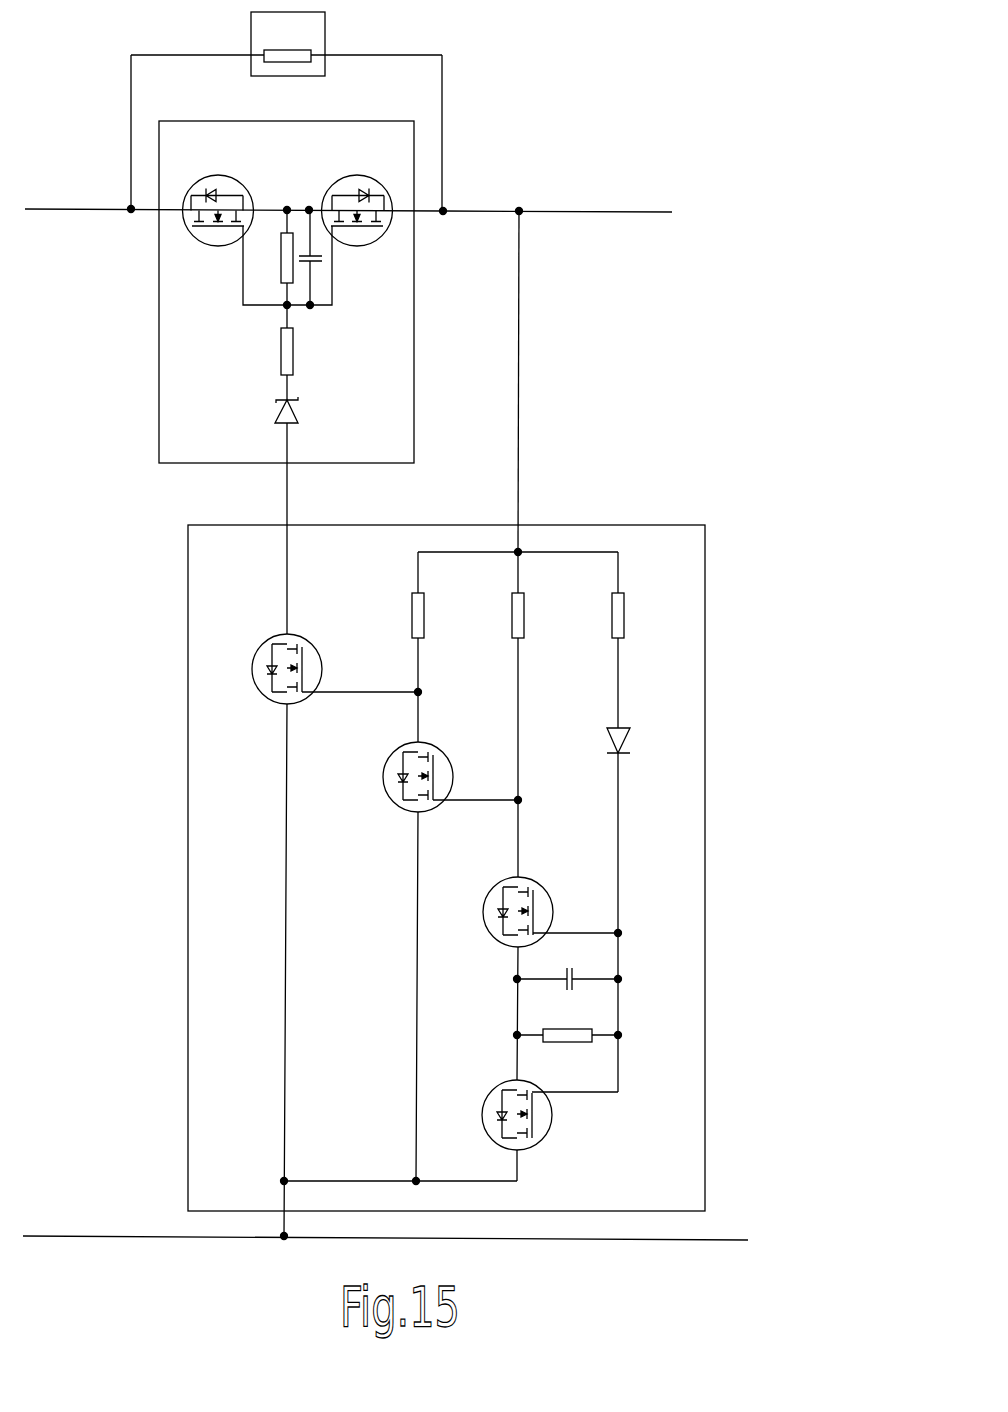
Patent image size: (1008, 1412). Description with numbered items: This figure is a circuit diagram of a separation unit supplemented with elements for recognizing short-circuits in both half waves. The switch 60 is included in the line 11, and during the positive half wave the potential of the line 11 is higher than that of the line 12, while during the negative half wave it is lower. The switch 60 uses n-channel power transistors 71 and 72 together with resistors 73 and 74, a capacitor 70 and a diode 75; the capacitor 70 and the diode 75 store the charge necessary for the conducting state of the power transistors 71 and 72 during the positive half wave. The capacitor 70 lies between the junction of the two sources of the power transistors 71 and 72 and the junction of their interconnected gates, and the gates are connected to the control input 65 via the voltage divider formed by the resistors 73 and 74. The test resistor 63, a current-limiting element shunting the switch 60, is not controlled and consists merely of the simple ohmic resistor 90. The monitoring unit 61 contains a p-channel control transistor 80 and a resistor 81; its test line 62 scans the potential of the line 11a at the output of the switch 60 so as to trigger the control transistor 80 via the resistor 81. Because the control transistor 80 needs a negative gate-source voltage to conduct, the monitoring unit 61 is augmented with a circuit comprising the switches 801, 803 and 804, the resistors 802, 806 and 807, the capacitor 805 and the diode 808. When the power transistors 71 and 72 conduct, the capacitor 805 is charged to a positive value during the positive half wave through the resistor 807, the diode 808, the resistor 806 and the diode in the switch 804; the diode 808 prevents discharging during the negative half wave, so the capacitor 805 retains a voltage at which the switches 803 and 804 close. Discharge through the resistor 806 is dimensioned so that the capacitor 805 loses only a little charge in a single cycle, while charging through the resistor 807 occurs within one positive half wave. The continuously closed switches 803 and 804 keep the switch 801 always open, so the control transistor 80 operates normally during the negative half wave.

The line 11 is at (90, 207).
The line at the output of the switch 11a is at (598, 210).
The line 12 is at (133, 1235).
The switch 60 is at (157, 287).
The monitoring unit 61 is at (187, 968).
The test line 62 is at (520, 303).
The test resistor 63 is at (325, 42).
The control input 65 is at (287, 467).
The capacitor 70 is at (323, 260).
The power transistor 71 is at (218, 246).
The power transistor 72 is at (352, 175).
The resistor 73 is at (288, 260).
The resistor 74 is at (293, 345).
The diode 75 is at (297, 418).
The control transistor 80 is at (253, 682).
The resistor 81 is at (425, 600).
The ohmic resistor 90 is at (277, 60).
The switch 801 is at (385, 783).
The resistor 802 is at (525, 605).
The switch 803 is at (483, 922).
The switch 804 is at (553, 1115).
The capacitor 805 is at (575, 968).
The resistor 806 is at (570, 1037).
The resistor 807 is at (625, 605).
The diode 808 is at (627, 746).